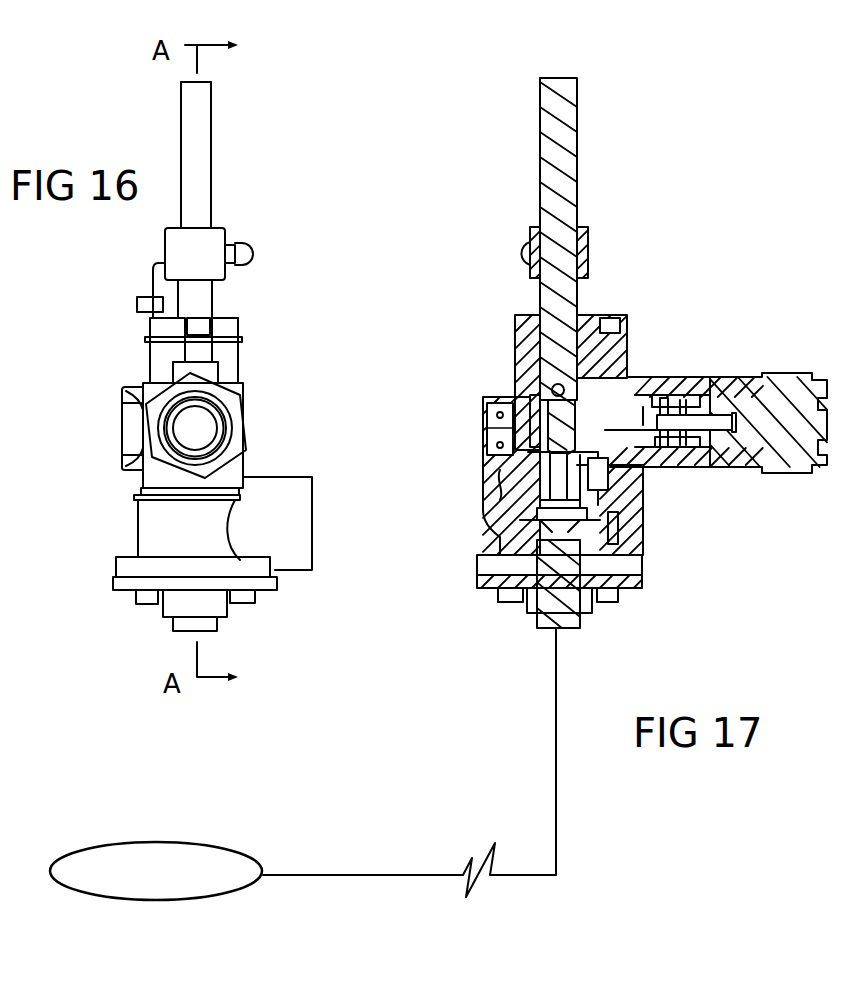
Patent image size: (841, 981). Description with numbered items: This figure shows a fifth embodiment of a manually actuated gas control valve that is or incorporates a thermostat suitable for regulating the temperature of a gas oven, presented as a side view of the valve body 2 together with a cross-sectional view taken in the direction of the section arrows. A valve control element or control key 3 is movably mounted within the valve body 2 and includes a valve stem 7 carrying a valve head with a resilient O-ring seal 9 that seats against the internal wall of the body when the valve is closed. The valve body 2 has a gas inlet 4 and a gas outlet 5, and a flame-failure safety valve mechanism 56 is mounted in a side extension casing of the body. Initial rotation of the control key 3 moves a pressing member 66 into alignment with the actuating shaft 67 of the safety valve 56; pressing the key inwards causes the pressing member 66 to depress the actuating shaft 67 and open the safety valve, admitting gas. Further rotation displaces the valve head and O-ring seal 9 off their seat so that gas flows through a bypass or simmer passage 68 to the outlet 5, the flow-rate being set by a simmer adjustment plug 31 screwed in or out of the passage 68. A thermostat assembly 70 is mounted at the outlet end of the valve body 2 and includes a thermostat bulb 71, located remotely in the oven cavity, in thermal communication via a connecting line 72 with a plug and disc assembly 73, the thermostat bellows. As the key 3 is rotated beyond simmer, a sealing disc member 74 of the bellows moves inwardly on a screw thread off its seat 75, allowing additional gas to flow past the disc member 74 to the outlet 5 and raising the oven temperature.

In FIG. 16, the valve body 2 is at (232, 368).
In FIG. 17, the valve body 2 is at (518, 358).
In FIG. 16, the valve control element 3 is at (224, 157).
In FIG. 17, the valve control element 3 is at (590, 160).
In FIG. 16, the gas inlet 4 is at (108, 433).
In FIG. 16, the gas outlet 5 is at (322, 520).
In FIG. 17, the valve stem 7 is at (556, 292).
In FIG. 17, the resilient O-ring seal 9 is at (614, 460).
In FIG. 17, the simmer adjustment plug 31 is at (484, 428).
In FIG. 17, the flame-failure safety valve mechanism 56 is at (745, 355).
In FIG. 16, the pressing member 66 is at (136, 303).
In FIG. 16, the actuating shaft 67 is at (198, 318).
In FIG. 17, the actuating shaft 67 is at (622, 322).
In FIG. 17, the bypass or simmer passage 68 is at (498, 478).
In FIG. 16, the thermostat assembly 70 is at (120, 615).
In FIG. 17, the thermostat assembly 70 is at (612, 622).
In FIG. 17, the thermostat bulb 71 is at (210, 812).
In FIG. 17, the connecting line 72 is at (558, 838).
In FIG. 17, the plug and disc assembly 73 is at (625, 533).
In FIG. 17, the sealing disc member 74 is at (512, 528).
In FIG. 17, the seat 75 is at (620, 500).